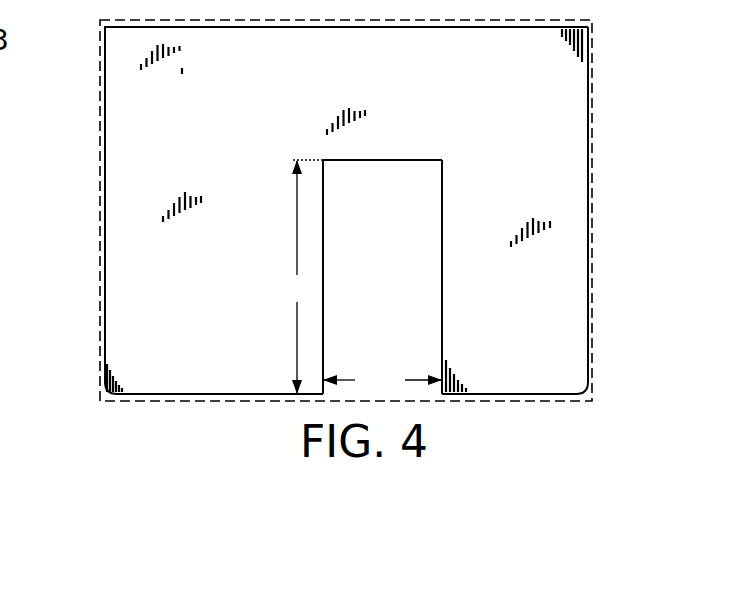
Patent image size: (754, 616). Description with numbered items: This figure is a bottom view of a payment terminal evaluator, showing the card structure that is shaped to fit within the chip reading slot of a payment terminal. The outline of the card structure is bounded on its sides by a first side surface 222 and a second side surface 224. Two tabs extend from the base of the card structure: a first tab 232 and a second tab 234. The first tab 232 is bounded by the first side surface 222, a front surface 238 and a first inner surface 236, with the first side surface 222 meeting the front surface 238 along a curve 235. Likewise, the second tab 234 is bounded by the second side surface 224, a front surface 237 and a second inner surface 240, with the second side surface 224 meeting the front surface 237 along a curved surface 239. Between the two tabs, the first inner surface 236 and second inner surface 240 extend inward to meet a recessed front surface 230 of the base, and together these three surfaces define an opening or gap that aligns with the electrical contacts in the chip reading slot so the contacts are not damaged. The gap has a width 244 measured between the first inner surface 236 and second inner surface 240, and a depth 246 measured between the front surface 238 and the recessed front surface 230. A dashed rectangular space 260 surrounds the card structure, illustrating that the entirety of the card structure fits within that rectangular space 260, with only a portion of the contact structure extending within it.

The rectangular space 260 is at (590, 27).
The first side surface 222 is at (103, 285).
The second side surface 224 is at (588, 275).
The curve 235 is at (113, 391).
The curved surface 239 is at (585, 393).
The front surface 238 is at (222, 394).
The front surface 237 is at (526, 398).
The recessed front surface 230 is at (402, 160).
The first inner surface 236 is at (323, 310).
The second inner surface 240 is at (440, 348).
The first tab 232 is at (185, 343).
The second tab 234 is at (570, 360).
The depth 246 is at (297, 277).
The width 244 is at (382, 380).